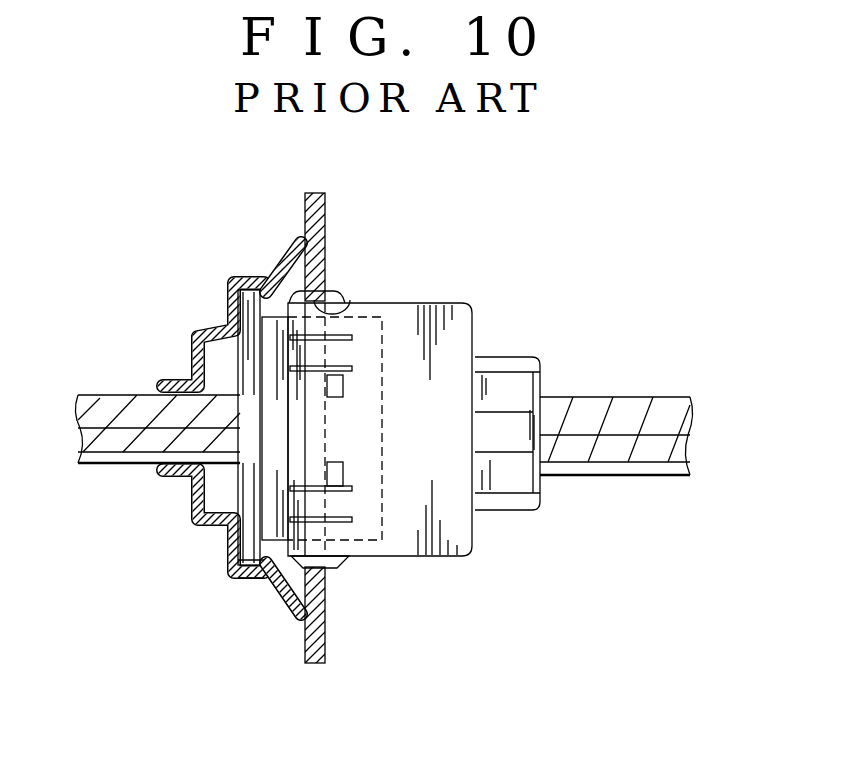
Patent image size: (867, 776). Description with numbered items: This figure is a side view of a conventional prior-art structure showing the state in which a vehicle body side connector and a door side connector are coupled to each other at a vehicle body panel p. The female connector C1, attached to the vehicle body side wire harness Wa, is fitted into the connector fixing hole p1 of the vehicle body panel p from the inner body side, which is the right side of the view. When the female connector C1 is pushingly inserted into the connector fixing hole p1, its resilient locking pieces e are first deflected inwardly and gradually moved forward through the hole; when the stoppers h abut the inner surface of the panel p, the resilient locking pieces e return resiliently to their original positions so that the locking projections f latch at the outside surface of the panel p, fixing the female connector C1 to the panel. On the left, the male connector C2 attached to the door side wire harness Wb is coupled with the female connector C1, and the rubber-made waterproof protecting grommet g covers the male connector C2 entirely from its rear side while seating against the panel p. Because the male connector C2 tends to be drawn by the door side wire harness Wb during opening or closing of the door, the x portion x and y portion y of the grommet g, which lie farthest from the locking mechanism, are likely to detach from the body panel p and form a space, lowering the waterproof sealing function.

The vehicle body panel p is at (325, 210).
The connector fixing hole p1 is at (347, 300).
The x portion of the grommet x is at (304, 238).
The y portion of the grommet y is at (303, 617).
The waterproof protecting grommet g is at (243, 277).
The locking projection f is at (236, 578).
The resilient locking piece e is at (320, 503).
The stopper h is at (337, 570).
The female connector C1 is at (452, 302).
The male connector C2 is at (248, 488).
The vehicle body side wire harness Wa is at (623, 398).
The door side wire harness Wb is at (107, 402).